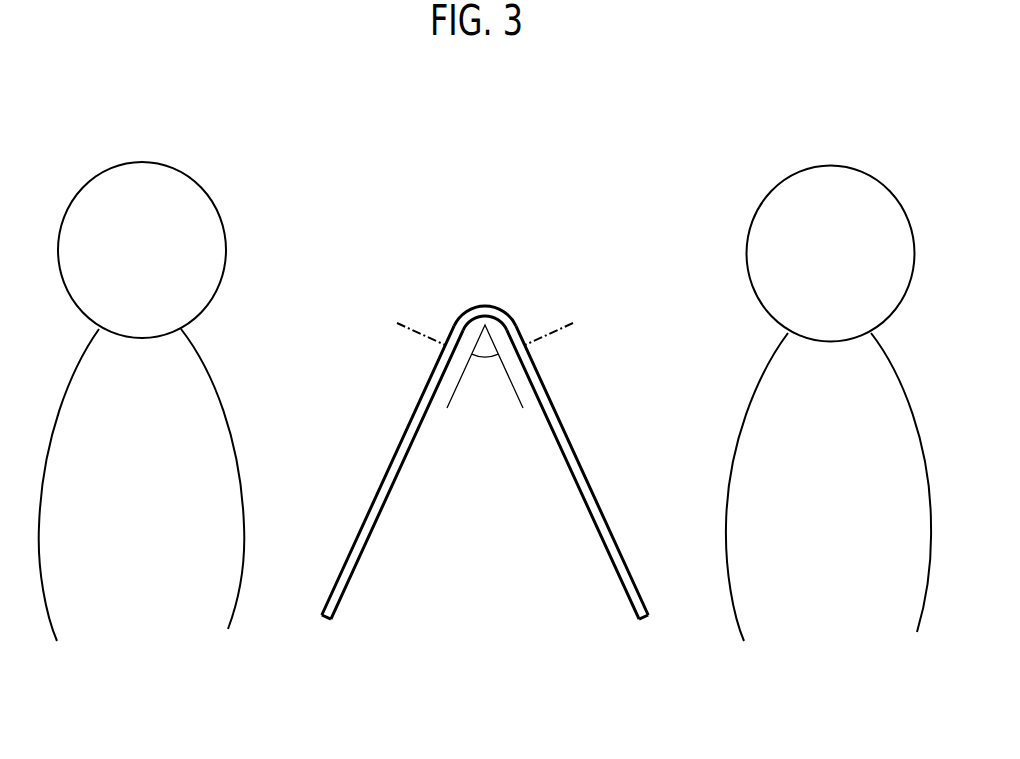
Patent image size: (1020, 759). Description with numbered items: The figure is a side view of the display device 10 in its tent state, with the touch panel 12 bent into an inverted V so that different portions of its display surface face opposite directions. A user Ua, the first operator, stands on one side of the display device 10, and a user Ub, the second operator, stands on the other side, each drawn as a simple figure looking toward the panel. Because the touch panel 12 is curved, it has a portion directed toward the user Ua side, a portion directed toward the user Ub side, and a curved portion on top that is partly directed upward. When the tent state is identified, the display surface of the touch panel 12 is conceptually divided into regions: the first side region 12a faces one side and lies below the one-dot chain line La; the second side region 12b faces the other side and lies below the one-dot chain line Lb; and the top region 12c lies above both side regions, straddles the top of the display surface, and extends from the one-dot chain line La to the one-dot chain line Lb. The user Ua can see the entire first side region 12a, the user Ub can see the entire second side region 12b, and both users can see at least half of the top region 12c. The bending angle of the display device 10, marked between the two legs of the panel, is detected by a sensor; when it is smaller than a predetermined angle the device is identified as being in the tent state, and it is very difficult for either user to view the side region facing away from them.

The display device 10 is at (486, 359).
The touch panel 12 is at (486, 416).
The first side region 12a is at (409, 422).
The second side region 12b is at (561, 422).
The top region 12c is at (485, 306).
The one-dot chain line La is at (398, 323).
The one-dot chain line Lb is at (572, 324).
The user Ua is at (147, 133).
The user Ub is at (837, 136).